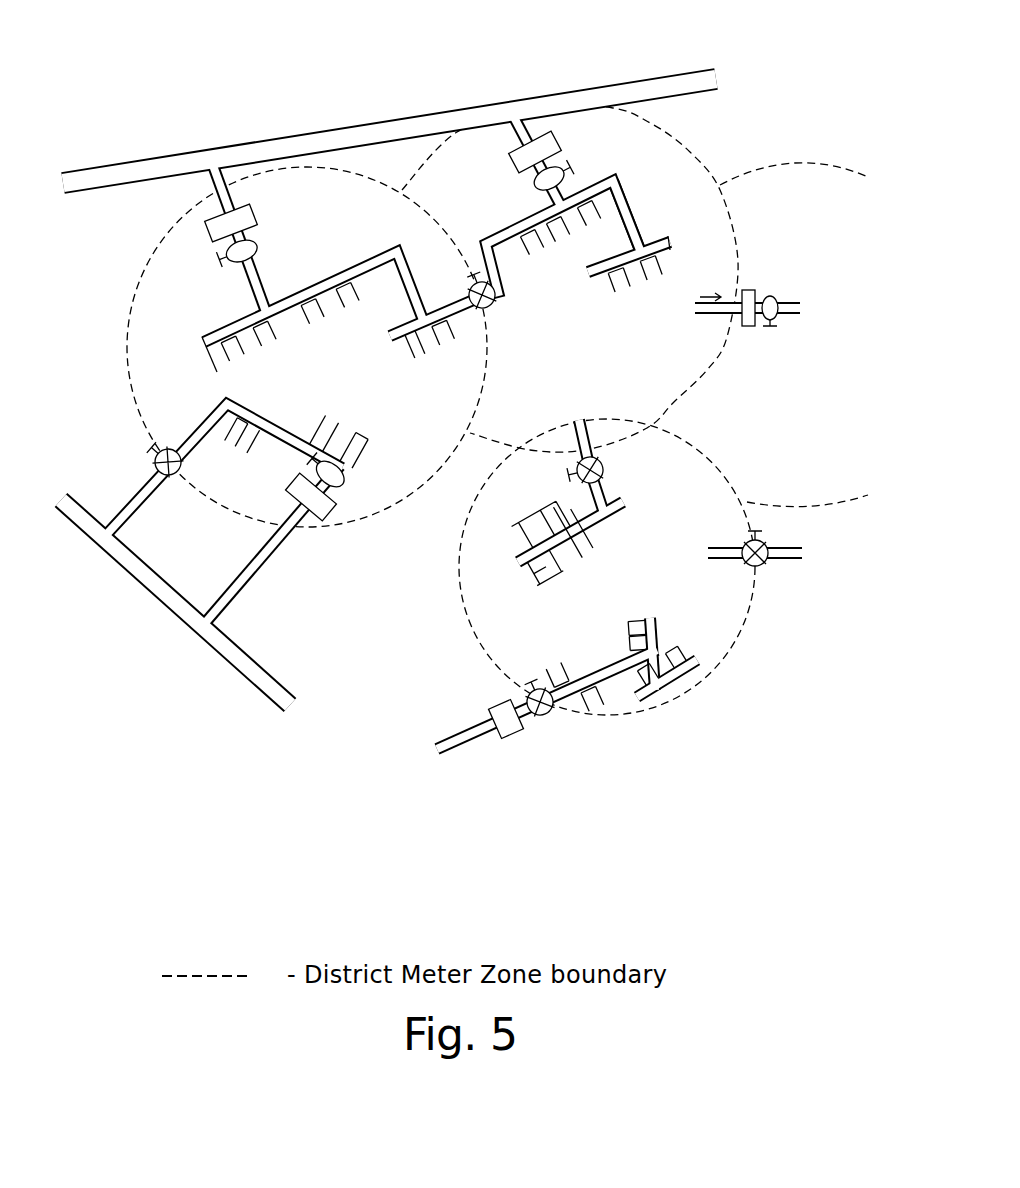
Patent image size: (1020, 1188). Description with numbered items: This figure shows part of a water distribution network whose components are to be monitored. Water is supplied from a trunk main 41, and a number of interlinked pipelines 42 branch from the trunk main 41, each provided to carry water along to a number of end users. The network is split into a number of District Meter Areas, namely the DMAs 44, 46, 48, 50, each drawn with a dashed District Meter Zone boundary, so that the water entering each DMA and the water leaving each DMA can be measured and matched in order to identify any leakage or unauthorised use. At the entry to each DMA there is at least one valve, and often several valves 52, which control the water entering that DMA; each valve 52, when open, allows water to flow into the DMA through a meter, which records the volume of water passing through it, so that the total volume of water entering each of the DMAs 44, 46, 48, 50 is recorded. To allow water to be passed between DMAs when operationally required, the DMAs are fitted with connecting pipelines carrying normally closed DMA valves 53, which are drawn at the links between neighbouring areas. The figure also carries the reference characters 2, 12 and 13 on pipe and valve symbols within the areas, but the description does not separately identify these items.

The trunk main 41 is at (481, 113).
The distribution pipe 2 is at (257, 279).
The pipelines 42 is at (636, 230).
The District Meter Area 44 is at (343, 396).
The District Meter Area 46 is at (665, 376).
The District Meter Area 48 is at (702, 617).
The District Meter Area 50 is at (835, 402).
The valve 52 is at (540, 688).
The pressure reducing valve (PRV) 12 is at (359, 504).
The DMA valve 13 is at (600, 480).
The DMA valve 53 is at (152, 458).